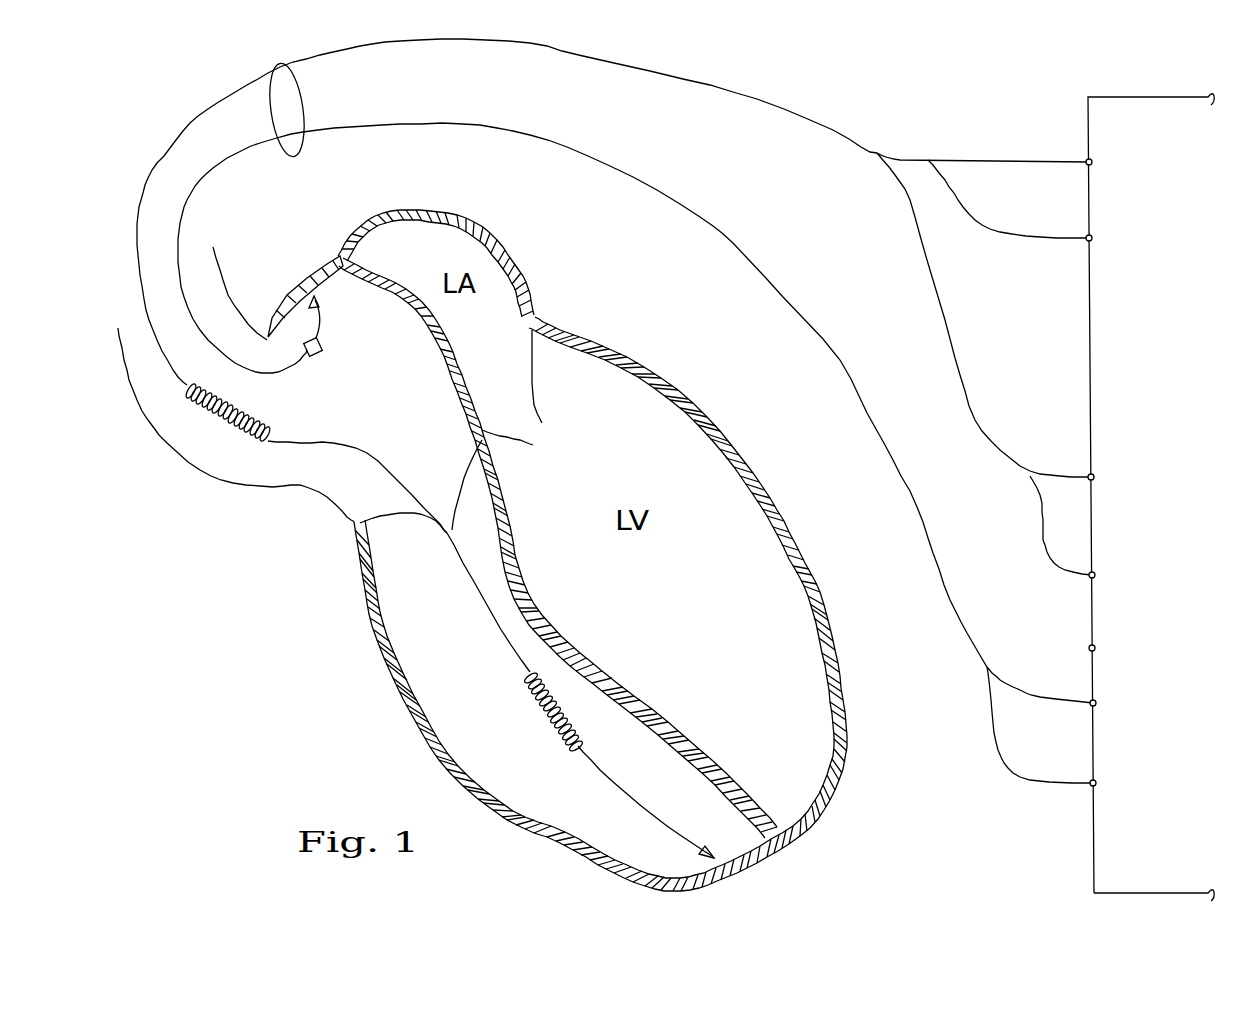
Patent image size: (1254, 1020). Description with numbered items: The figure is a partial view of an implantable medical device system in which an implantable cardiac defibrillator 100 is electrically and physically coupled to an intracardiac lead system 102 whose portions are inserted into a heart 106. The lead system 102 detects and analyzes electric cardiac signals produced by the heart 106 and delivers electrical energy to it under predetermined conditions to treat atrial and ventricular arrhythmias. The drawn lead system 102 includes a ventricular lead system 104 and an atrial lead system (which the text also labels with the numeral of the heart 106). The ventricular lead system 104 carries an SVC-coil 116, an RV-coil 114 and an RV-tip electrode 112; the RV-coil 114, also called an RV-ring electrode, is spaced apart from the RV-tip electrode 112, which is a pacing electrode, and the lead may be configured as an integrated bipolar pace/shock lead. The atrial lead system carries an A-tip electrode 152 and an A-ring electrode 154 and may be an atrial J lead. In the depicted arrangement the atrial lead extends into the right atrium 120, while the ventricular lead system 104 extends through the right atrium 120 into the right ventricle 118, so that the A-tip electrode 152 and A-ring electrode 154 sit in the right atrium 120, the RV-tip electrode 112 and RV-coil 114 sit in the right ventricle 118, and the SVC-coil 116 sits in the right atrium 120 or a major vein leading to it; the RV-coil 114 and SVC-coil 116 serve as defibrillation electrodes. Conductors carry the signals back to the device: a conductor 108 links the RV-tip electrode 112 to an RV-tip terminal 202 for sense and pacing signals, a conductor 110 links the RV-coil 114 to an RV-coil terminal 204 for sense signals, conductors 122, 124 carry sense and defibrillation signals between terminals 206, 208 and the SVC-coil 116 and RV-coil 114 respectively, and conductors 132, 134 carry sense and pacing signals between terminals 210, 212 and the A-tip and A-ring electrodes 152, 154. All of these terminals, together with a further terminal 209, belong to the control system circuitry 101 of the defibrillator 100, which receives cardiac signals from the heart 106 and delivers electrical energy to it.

The implantable cardiac defibrillator 100 is at (1105, 97).
The control system circuitry 101 is at (1172, 875).
The intracardiac lead system 102 is at (271, 74).
The ventricular lead system 104 is at (766, 101).
The heart 106 is at (730, 240).
The conductor 108 is at (993, 160).
The conductor 110 is at (1023, 233).
The RV-tip electrode 112 is at (735, 872).
The RV-coil 114 is at (552, 717).
The SVC-coil 116 is at (230, 409).
The right ventricle 118 is at (464, 645).
The right atrium 120 is at (392, 345).
The conductor 122 is at (1067, 480).
The conductor 124 is at (1049, 565).
The conductor 132 is at (1049, 698).
The conductor 134 is at (1003, 768).
The A-tip electrode 152 is at (319, 295).
The A-ring electrode 154 is at (324, 355).
The RV-tip terminal 202 is at (1086, 164).
The RV-coil terminal 204 is at (1095, 242).
The terminal 206 is at (1088, 474).
The terminal 208 is at (1095, 578).
The terminal 209 is at (1095, 651).
The terminal 210 is at (1088, 706).
The terminal 212 is at (1088, 786).